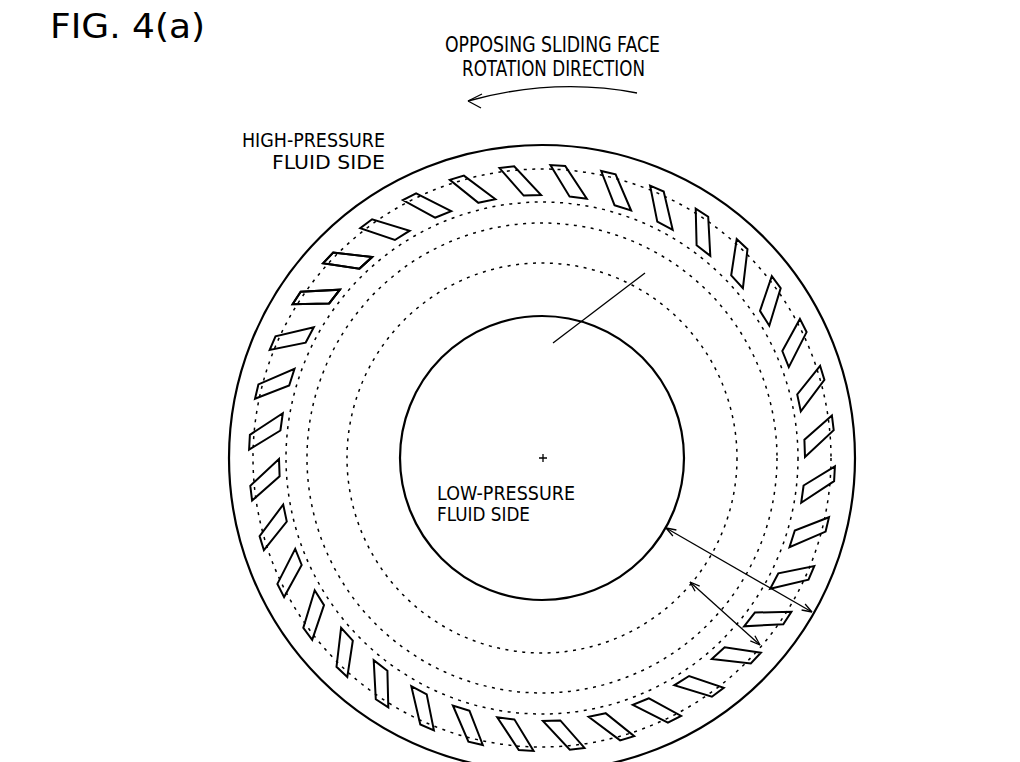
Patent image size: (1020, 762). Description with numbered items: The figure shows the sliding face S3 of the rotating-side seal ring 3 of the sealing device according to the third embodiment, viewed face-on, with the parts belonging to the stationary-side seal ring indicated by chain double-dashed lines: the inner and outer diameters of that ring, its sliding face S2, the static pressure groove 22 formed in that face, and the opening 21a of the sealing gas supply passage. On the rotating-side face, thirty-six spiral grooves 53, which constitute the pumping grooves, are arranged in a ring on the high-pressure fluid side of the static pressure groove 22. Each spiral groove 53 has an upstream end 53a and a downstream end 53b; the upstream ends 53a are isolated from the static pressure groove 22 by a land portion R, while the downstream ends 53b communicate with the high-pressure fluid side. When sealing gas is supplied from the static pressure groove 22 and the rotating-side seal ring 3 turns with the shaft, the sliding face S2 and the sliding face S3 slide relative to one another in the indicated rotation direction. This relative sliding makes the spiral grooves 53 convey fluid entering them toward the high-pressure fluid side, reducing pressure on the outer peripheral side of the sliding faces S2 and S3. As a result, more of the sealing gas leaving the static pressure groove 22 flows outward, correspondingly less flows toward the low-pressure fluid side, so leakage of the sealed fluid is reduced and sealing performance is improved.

The rotating-side seal ring 3 is at (679, 172).
The opening of the sealing gas supply passage 21a is at (547, 216).
The static pressure groove 22 is at (713, 273).
The spiral grooves 53 is at (343, 253).
The downstream ends 53b is at (324, 263).
The upstream ends 53a is at (372, 257).
The land portion R is at (623, 213).
The sliding face of the rotating-side seal ring S3 is at (738, 569).
The sliding face of the stationary-side seal ring S2 is at (735, 619).